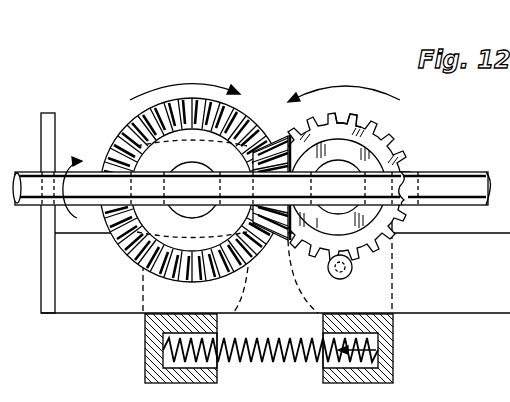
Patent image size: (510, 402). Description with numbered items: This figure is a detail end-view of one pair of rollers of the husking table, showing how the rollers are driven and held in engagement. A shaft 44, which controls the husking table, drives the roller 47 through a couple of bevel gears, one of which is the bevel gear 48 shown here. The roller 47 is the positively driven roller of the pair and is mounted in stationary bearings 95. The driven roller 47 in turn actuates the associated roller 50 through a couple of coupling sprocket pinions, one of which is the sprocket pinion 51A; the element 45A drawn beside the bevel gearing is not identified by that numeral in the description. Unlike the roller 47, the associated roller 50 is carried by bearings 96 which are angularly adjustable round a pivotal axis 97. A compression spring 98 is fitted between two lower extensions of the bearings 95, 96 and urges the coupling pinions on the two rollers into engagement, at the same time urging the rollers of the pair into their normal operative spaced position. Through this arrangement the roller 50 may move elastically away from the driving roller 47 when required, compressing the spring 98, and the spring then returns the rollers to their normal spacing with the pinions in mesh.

The shaft 44 is at (445, 173).
The bevel gear 45A is at (124, 130).
The roller 47 is at (95, 280).
The bevel gear 48 is at (276, 136).
The associated roller 50 is at (401, 140).
The sprocket pinion 51A is at (366, 118).
The stationary bearings 95 is at (143, 292).
The bearings 96 is at (385, 293).
The pivotal axis 97 is at (352, 265).
The compression spring 98 is at (270, 362).